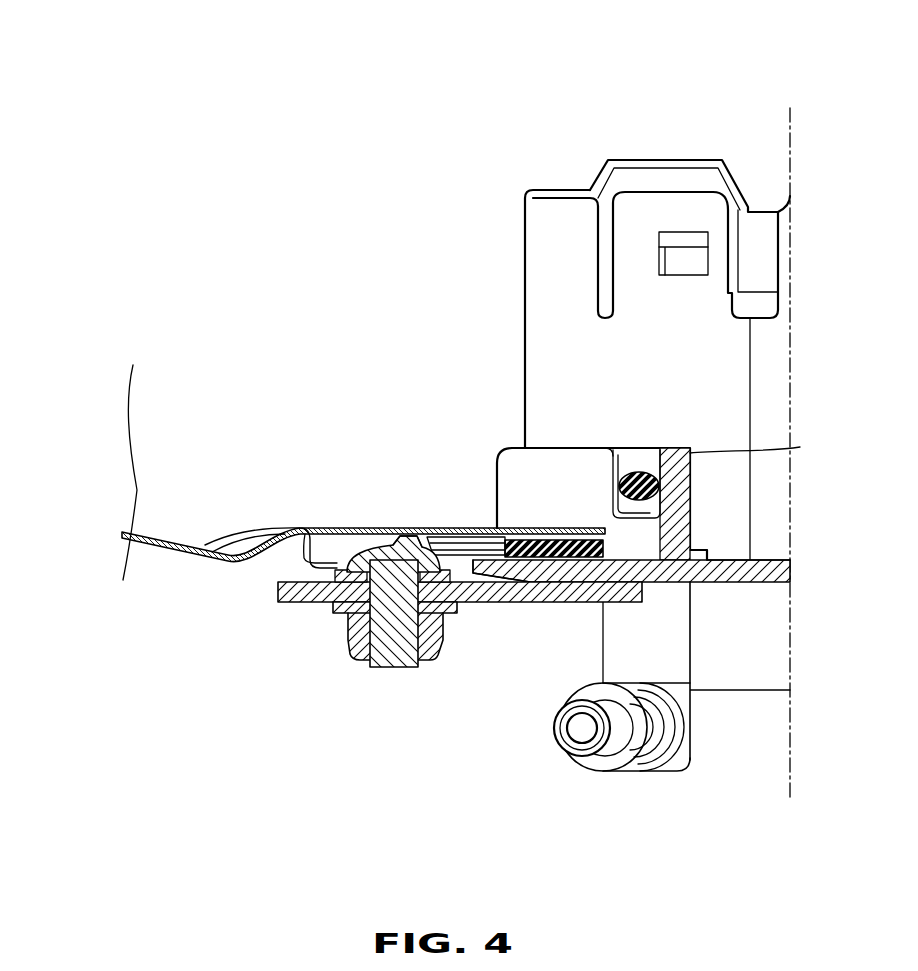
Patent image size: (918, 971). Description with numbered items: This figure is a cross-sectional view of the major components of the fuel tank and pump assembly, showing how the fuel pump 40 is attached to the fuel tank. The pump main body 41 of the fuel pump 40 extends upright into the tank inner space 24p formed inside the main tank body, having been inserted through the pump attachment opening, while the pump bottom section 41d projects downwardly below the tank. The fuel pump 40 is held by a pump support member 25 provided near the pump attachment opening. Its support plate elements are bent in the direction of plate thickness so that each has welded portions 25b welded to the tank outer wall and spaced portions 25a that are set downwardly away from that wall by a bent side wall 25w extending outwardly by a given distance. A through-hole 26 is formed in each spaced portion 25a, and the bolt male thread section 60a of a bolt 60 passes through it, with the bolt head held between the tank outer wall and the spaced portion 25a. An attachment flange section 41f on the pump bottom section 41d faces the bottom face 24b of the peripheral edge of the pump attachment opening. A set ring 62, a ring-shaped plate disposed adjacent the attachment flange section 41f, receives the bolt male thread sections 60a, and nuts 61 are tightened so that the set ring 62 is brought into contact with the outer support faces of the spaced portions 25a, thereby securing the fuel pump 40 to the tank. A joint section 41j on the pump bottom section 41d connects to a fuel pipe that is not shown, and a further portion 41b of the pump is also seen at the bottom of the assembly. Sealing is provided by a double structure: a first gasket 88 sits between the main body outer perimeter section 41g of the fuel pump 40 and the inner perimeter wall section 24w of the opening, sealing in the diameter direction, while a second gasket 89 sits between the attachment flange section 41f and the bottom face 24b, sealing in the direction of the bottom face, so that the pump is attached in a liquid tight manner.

The fuel pump 40 is at (665, 408).
The pump main body 41 is at (665, 483).
The bracket bottom flange 41b is at (730, 583).
The pump bottom section 41d is at (753, 693).
The attachment flange section 41f is at (540, 578).
The main body outer perimeter section 41g is at (800, 447).
The joint section 41j is at (567, 748).
The tank inner space 24p is at (223, 447).
The inner perimeter wall section 24w is at (592, 473).
The bottom face 24b is at (437, 537).
The pump support member 25 is at (233, 543).
The spaced portion 25a is at (335, 582).
The welded portion 25b is at (277, 552).
The bent side wall 25w is at (298, 528).
The through-hole 26 is at (396, 544).
The bolt 60 is at (368, 588).
The bolt male thread section 60a is at (402, 662).
The nut 61 is at (347, 635).
The set ring 62 is at (505, 602).
The first gasket 88 is at (645, 472).
The second gasket 89 is at (532, 540).